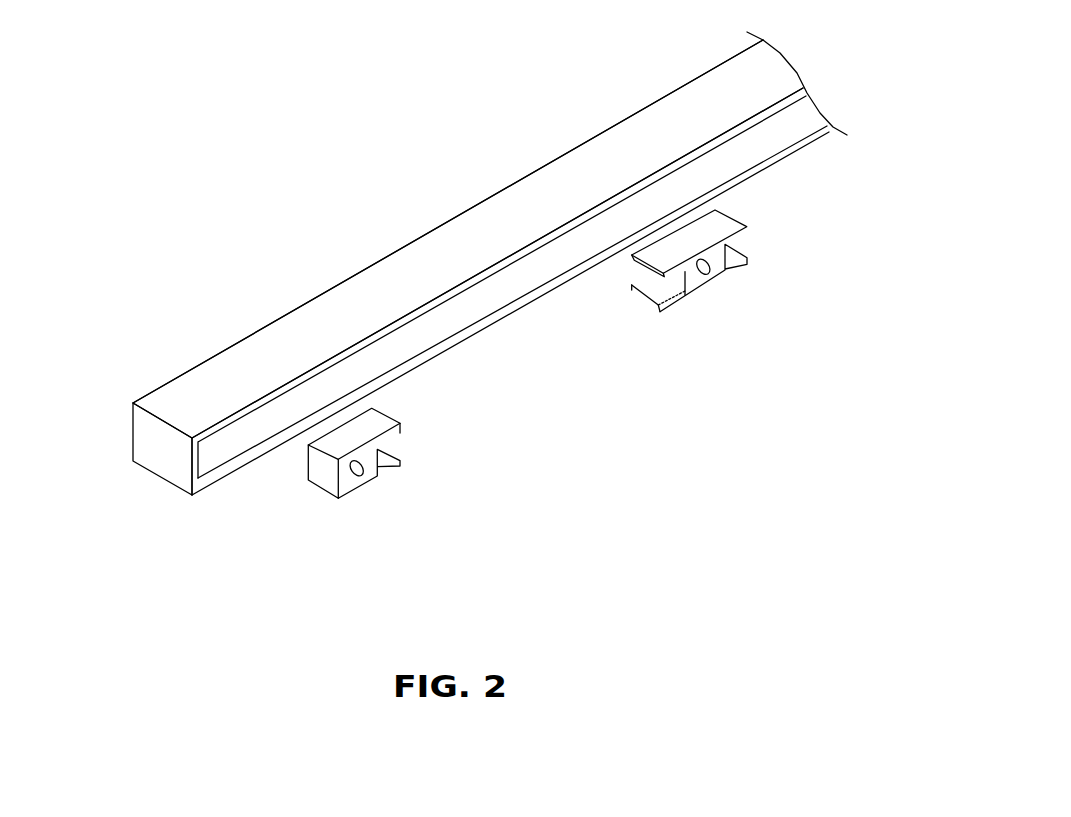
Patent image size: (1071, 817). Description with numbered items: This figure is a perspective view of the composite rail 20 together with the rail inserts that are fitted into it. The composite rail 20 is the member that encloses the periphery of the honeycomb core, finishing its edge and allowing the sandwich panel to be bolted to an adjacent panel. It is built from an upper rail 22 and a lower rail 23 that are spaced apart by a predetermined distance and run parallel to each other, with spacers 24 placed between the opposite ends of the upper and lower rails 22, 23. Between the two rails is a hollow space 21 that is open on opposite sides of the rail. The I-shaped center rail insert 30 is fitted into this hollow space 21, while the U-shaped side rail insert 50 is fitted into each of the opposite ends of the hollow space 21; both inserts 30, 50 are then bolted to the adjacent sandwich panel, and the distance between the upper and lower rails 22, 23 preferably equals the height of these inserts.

The composite rail 20 is at (386, 186).
The hollow space 21 is at (490, 281).
The upper rail 22 is at (542, 195).
The lower rail 23 is at (428, 330).
The spacer 24 is at (158, 445).
The I-shaped center rail insert 30 is at (698, 285).
The U-shaped side rail insert 50 is at (355, 488).